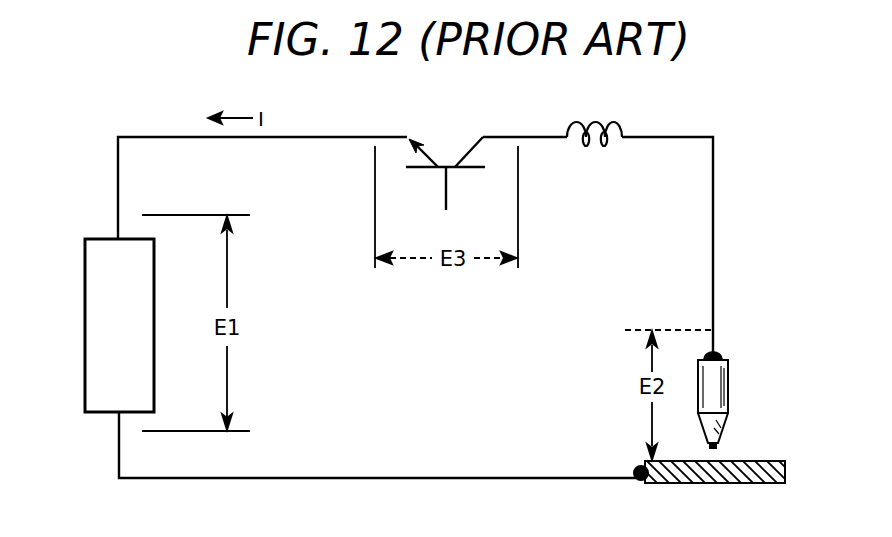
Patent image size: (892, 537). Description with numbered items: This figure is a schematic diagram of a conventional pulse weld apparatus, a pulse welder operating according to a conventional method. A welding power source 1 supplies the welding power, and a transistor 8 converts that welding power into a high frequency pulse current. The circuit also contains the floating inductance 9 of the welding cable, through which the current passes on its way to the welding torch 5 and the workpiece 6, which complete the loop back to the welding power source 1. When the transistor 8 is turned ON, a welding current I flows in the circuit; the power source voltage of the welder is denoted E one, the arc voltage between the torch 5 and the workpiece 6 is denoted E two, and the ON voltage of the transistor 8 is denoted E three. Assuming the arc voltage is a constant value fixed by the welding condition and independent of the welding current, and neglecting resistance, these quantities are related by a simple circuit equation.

The welding power source 1 is at (90, 238).
The welding torch 5 is at (728, 415).
The workpiece 6 is at (778, 461).
The transistor 8 is at (437, 142).
The floating inductance of a welding cable 9 is at (617, 122).